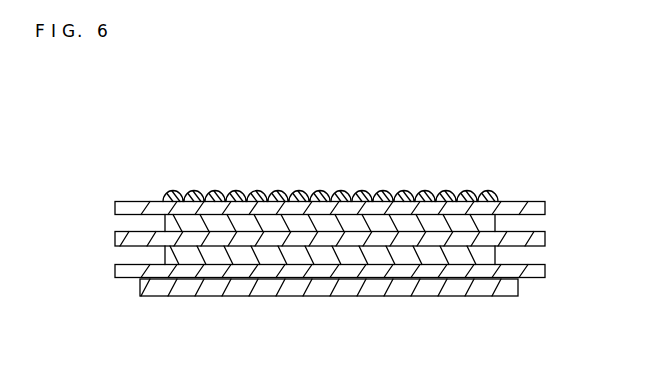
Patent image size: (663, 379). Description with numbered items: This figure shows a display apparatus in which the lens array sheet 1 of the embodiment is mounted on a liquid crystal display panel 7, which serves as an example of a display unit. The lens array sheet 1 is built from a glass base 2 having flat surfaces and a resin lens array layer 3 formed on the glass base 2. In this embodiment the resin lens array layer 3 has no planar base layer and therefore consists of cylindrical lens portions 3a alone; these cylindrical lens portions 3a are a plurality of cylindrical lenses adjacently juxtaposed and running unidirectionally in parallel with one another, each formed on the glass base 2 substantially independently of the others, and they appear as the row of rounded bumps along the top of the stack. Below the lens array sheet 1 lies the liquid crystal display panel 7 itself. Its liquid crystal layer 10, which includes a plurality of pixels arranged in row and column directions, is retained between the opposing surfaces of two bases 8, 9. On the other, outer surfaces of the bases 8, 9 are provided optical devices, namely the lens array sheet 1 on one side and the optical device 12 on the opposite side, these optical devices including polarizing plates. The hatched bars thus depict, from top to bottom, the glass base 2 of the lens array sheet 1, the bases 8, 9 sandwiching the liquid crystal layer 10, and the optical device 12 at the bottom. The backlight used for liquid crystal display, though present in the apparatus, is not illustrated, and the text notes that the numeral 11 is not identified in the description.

The lens array sheet 1 is at (500, 177).
The glass base 2 is at (565, 210).
The resin lens array layer 3 is at (380, 190).
The cylindrical lens portions 3a is at (342, 190).
The liquid crystal display panel 7 is at (557, 237).
The base 8 is at (112, 272).
The base 9 is at (115, 238).
The liquid crystal layer 10 is at (163, 252).
The upper base layer 11 is at (134, 202).
The optical device 12 is at (148, 297).